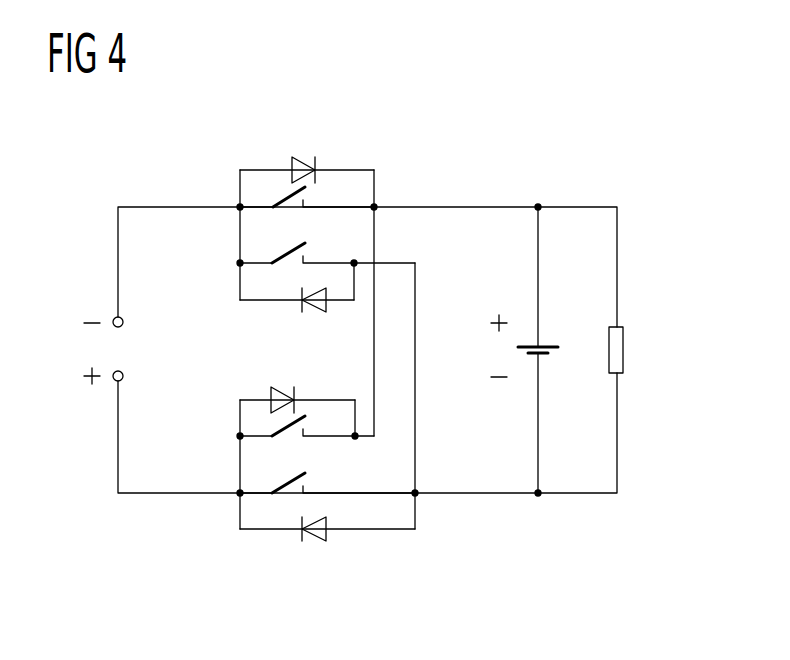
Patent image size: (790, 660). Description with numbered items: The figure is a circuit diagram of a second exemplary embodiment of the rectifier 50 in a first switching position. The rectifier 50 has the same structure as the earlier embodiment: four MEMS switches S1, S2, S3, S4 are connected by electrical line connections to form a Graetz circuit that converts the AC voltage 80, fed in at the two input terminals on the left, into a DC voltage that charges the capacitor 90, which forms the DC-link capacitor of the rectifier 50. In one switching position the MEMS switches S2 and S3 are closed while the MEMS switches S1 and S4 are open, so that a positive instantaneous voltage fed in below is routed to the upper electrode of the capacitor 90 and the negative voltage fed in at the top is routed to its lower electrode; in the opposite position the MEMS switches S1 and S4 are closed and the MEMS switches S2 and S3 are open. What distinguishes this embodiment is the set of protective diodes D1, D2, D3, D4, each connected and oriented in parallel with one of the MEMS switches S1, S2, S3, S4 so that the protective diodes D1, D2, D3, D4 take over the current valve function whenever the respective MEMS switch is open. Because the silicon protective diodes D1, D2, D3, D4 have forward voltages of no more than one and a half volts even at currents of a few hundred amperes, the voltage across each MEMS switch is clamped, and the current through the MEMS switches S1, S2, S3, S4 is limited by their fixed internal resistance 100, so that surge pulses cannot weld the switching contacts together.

The rectifier 50 is at (335, 341).
The AC voltage 80 is at (107, 352).
The capacitor 90 is at (548, 345).
The internal resistance 100 is at (625, 350).
The MEMS switch S1 is at (287, 197).
The MEMS switch S2 is at (287, 256).
The MEMS switch S3 is at (292, 433).
The MEMS switch S4 is at (291, 480).
The protective diode D1 is at (308, 157).
The protective diode D2 is at (312, 312).
The protective diode D3 is at (284, 388).
The protective diode D4 is at (312, 541).